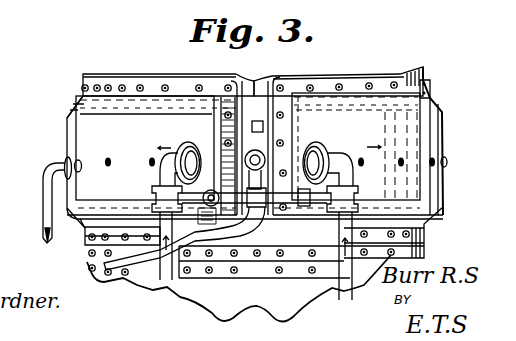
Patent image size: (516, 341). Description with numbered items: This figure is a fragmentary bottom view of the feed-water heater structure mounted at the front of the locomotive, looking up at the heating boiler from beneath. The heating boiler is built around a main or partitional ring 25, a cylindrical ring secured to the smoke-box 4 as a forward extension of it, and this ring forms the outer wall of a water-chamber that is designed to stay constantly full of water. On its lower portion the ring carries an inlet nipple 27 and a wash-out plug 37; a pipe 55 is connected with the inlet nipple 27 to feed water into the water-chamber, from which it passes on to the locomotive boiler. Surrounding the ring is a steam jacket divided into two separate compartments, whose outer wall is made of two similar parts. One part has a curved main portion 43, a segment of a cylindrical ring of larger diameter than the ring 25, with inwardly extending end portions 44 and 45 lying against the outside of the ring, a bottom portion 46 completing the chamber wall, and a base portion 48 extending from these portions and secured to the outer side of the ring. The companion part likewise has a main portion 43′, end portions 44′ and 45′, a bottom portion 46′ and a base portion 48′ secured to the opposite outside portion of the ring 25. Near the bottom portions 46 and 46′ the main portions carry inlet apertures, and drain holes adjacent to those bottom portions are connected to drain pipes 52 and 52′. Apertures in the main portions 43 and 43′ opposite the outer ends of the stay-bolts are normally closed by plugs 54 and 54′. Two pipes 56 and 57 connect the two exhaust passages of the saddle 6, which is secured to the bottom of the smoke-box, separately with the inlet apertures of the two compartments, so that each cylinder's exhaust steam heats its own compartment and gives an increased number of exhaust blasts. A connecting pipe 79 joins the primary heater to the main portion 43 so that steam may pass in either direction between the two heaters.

The smoke-box 4 is at (132, 272).
The saddle 6 is at (207, 306).
The main or partitional ring 25 is at (424, 72).
The inlet nipple 27 is at (245, 130).
The wash-out plug 37 is at (260, 122).
The main portion 43 is at (78, 128).
The main portion 43′ is at (426, 132).
The end portion 44 is at (78, 223).
The end portion 44′ is at (430, 224).
The end portion 45 is at (77, 110).
The end portion 45′ is at (443, 102).
The bottom portion 46 is at (200, 108).
The bottom portion 46′ is at (303, 118).
The base portion 48 is at (130, 86).
The base portion 48′ is at (378, 84).
The drain pipe 52 is at (172, 288).
The drain pipe 52′ is at (339, 297).
The plug 54 is at (72, 158).
The plug 54′ is at (448, 173).
The pipe 55 is at (255, 304).
The pipe 56 is at (156, 184).
The pipe 57 is at (356, 179).
The connecting pipe 79 is at (42, 197).